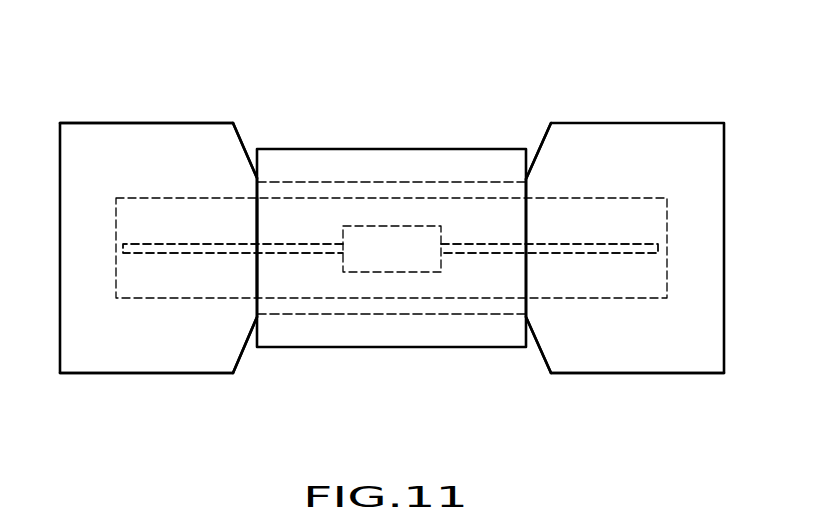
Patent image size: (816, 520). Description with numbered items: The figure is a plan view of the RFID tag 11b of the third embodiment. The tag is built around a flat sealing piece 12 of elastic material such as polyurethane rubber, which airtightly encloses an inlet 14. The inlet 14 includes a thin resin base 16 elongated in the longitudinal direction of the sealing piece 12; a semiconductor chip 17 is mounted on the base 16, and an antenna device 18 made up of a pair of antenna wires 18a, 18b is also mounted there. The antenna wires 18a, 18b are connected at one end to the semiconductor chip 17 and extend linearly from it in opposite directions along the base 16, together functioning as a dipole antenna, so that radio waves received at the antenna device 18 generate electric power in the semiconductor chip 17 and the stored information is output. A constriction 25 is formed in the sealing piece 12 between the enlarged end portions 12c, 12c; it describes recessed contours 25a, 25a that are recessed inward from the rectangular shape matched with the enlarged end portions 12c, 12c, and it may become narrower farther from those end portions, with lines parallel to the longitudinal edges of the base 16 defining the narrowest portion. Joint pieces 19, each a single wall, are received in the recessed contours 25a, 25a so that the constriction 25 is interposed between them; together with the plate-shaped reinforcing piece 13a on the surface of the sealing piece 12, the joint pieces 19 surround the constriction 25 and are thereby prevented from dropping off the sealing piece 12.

The RFID tag 11b is at (172, 110).
The sealing piece 12 is at (103, 123).
The enlarged end portions 12c is at (150, 373).
The reinforcing piece 13a is at (257, 273).
The inlet 14 is at (613, 198).
The base 16 is at (620, 298).
The semiconductor chip 17 is at (347, 236).
The antenna device 18 is at (220, 243).
The antenna wire 18a is at (182, 248).
The antenna wire 18b is at (602, 250).
The joint piece 19 is at (393, 148).
The constriction 25 is at (253, 138).
The recessed contour 25a is at (541, 137).